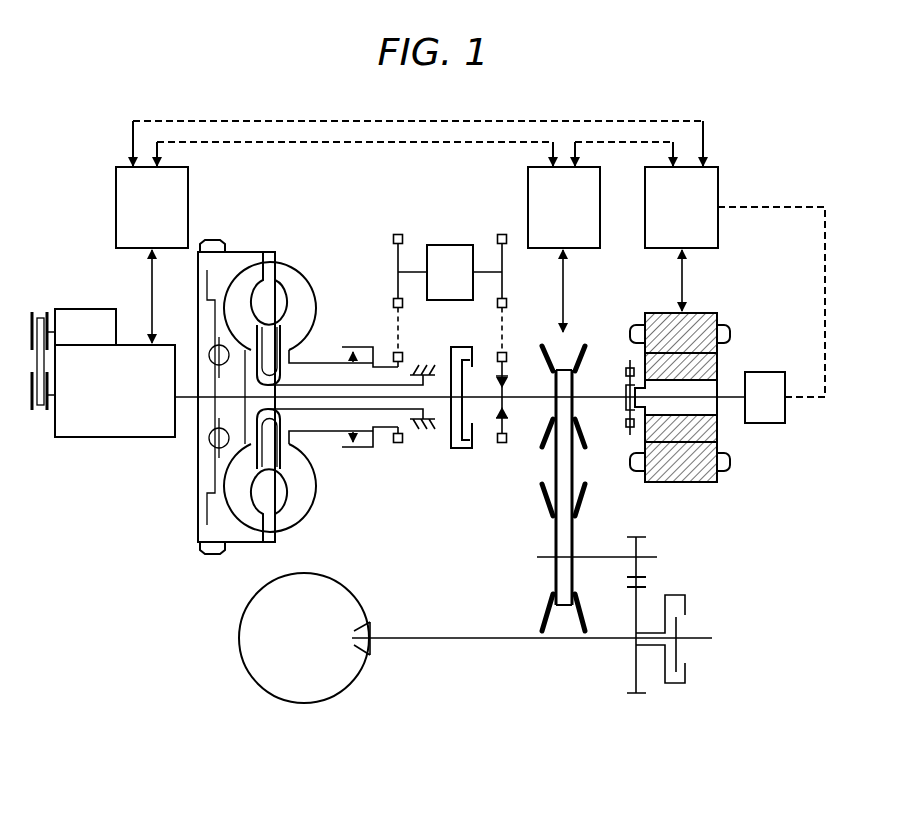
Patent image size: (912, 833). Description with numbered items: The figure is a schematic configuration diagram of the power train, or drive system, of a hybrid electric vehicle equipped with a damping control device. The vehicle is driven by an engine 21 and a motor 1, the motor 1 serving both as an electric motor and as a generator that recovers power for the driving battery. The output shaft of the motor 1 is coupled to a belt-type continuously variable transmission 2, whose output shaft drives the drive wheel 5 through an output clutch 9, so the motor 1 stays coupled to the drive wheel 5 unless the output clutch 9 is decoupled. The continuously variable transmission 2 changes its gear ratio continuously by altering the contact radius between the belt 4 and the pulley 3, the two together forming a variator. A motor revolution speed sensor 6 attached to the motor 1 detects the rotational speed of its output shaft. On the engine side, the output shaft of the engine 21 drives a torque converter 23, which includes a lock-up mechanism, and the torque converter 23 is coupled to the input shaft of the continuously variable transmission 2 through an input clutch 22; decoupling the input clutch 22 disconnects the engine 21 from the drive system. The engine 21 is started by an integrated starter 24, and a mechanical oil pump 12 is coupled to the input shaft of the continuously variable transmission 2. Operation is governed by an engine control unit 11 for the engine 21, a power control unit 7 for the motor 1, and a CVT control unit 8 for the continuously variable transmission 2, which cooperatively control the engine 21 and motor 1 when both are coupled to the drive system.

The motor 1 is at (740, 298).
The continuously variable transmission 2 is at (557, 494).
The pulley 3 is at (545, 447).
The belt 4 is at (574, 456).
The drive wheel 5 is at (304, 703).
The motor revolution speed sensor 6 is at (785, 415).
The power control unit 7 is at (718, 178).
The CVT control unit 8 is at (600, 191).
The output clutch 9 is at (692, 627).
The engine control unit 11 is at (116, 199).
The mechanical oil pump 12 is at (447, 245).
The engine 21 is at (78, 437).
The input clutch 22 is at (460, 455).
The torque converter 23 is at (265, 245).
The integrated starter 24 is at (85, 309).